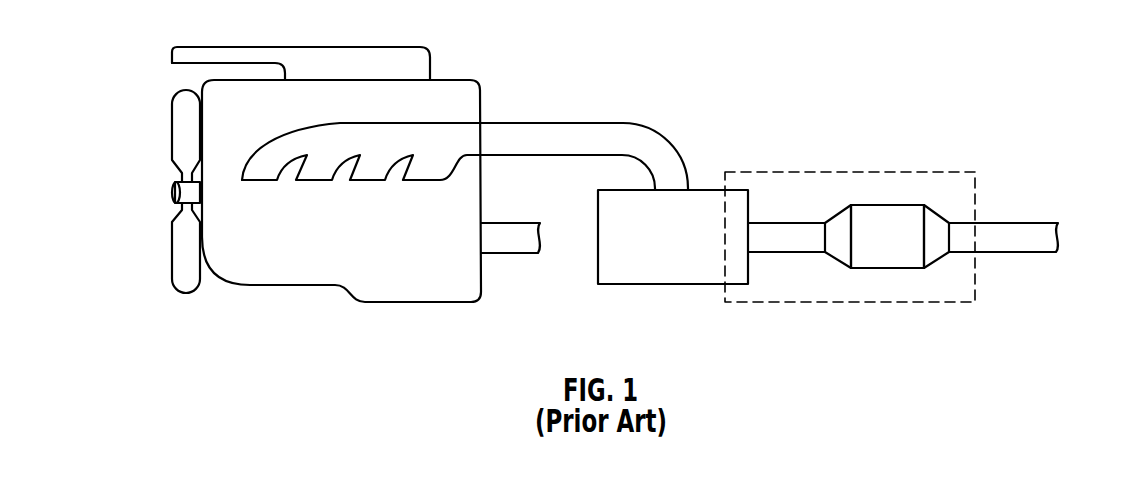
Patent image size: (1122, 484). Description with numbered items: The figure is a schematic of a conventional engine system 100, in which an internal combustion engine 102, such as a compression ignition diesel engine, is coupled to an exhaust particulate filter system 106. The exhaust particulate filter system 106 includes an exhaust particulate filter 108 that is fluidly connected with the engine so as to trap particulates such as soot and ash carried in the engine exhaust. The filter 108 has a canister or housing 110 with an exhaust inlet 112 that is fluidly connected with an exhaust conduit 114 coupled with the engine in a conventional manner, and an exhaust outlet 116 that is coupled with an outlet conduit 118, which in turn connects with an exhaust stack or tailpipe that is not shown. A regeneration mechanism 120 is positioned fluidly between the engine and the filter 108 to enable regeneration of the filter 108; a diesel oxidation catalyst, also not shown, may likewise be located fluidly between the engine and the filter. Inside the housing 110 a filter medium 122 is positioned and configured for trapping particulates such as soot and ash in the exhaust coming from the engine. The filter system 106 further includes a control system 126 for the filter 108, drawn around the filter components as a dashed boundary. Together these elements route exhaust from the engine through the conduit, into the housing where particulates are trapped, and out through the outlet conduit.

The engine system 100 is at (882, 57).
The internal combustion engine 102 is at (285, 285).
The exhaust particulate filter system 106 is at (890, 238).
The exhaust particulate filter 108 is at (883, 270).
The housing 110 is at (852, 257).
The exhaust inlet 112 is at (826, 222).
The exhaust conduit 114 is at (583, 122).
The exhaust outlet 116 is at (950, 222).
The outlet conduit 118 is at (1013, 222).
The regeneration mechanism 120 is at (645, 285).
The filter medium 122 is at (900, 222).
The control system 126 is at (742, 172).